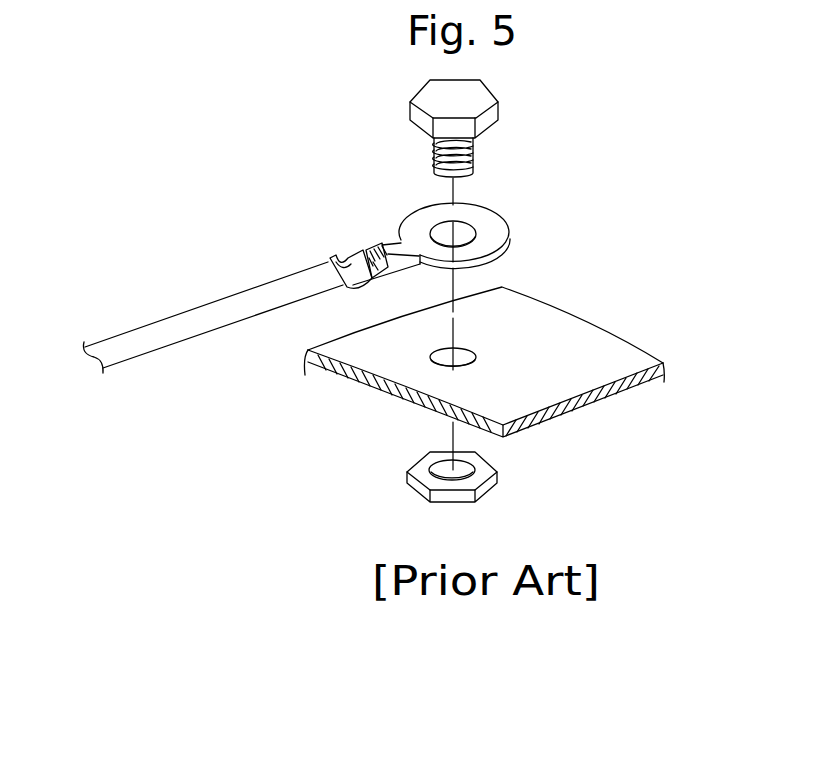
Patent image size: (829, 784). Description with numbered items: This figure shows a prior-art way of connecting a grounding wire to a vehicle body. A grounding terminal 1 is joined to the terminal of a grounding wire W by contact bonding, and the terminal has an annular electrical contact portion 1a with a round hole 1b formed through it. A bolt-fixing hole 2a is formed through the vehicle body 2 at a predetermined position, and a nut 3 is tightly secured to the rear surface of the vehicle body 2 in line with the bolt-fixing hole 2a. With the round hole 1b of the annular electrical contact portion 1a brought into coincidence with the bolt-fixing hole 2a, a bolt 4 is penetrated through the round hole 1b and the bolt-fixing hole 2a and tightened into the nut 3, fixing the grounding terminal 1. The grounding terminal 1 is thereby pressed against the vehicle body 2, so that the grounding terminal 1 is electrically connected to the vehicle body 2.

The grounding terminal 1 is at (469, 231).
The annular electrical contact portion 1a is at (490, 245).
The round hole 1b is at (463, 236).
The vehicle body 2 is at (490, 366).
The bolt-fixing hole 2a is at (472, 354).
The nut 3 is at (493, 492).
The bolt 4 is at (499, 107).
The grounding wire W is at (163, 333).